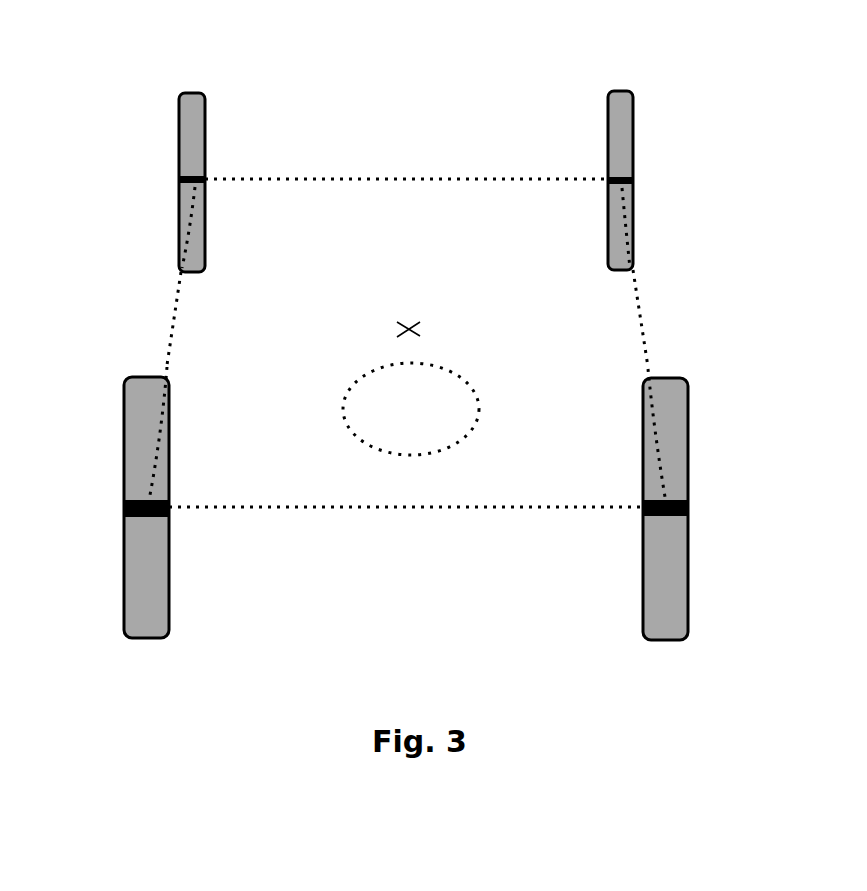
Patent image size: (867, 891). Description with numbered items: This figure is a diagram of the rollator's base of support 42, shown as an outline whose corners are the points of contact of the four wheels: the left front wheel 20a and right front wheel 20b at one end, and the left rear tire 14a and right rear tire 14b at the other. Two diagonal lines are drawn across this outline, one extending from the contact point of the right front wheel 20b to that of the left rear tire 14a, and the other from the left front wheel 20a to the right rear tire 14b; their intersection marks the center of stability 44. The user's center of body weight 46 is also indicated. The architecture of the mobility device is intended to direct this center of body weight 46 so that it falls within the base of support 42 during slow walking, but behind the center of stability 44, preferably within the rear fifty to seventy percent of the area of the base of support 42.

The left rear tire 14a is at (137, 445).
The right rear tire 14b is at (673, 430).
The left front wheel 20a is at (190, 127).
The right front wheel 20b is at (625, 123).
The base of support 42 is at (397, 175).
The center of stability 44 is at (422, 325).
The center of body weight 46 is at (410, 407).